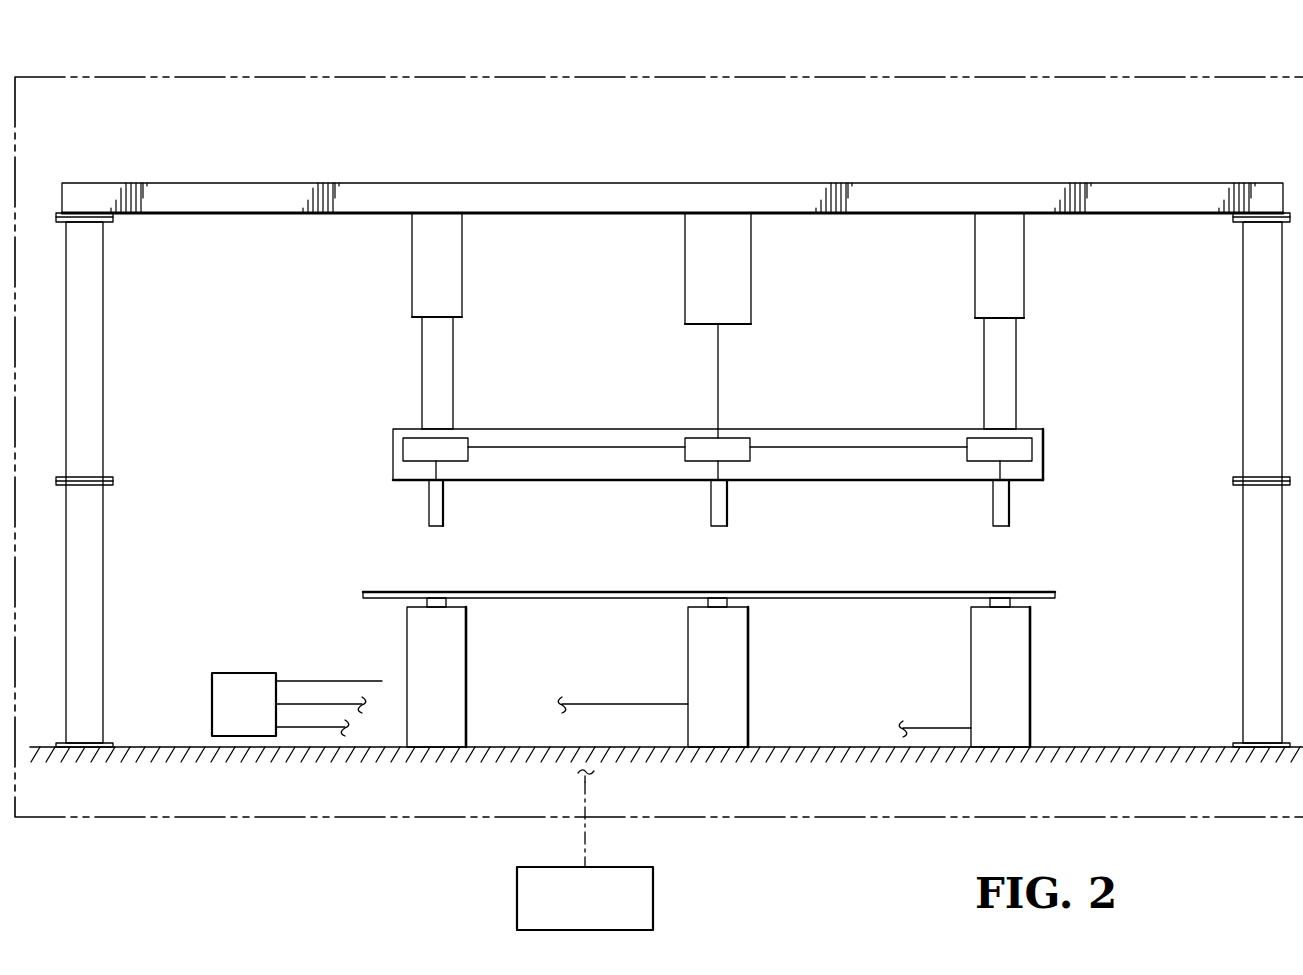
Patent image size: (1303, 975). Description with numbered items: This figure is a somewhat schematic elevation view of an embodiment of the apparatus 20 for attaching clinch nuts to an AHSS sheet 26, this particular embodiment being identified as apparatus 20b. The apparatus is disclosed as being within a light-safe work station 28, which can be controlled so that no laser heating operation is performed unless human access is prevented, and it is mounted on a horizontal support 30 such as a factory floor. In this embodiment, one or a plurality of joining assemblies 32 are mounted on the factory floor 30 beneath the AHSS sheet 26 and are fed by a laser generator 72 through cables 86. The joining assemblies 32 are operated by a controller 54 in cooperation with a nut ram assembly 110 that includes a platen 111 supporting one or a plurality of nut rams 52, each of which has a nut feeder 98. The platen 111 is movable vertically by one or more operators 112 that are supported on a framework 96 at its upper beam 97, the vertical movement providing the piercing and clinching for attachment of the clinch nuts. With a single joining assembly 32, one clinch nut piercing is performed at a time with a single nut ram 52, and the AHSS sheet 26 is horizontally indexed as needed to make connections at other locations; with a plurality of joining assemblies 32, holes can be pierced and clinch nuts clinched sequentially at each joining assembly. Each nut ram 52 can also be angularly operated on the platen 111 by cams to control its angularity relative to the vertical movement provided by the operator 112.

The light-safe work station 28 is at (621, 74).
The horizontal support 30 is at (325, 747).
The framework 96 is at (673, 430).
The upper beam 97 is at (623, 192).
The operator 112 is at (412, 241).
The nut ram assembly 110 is at (757, 413).
The platen 111 is at (846, 430).
The nut feeder 98 is at (413, 437).
The nut ram 52 is at (425, 503).
The apparatus 20 is at (338, 404).
The apparatus embodiment 20b is at (755, 621).
The AHSS sheet 26 is at (903, 592).
The joining assembly 32 is at (489, 661).
The laser generator 72 is at (243, 673).
The cables 86 is at (292, 727).
The controller 54 is at (517, 897).